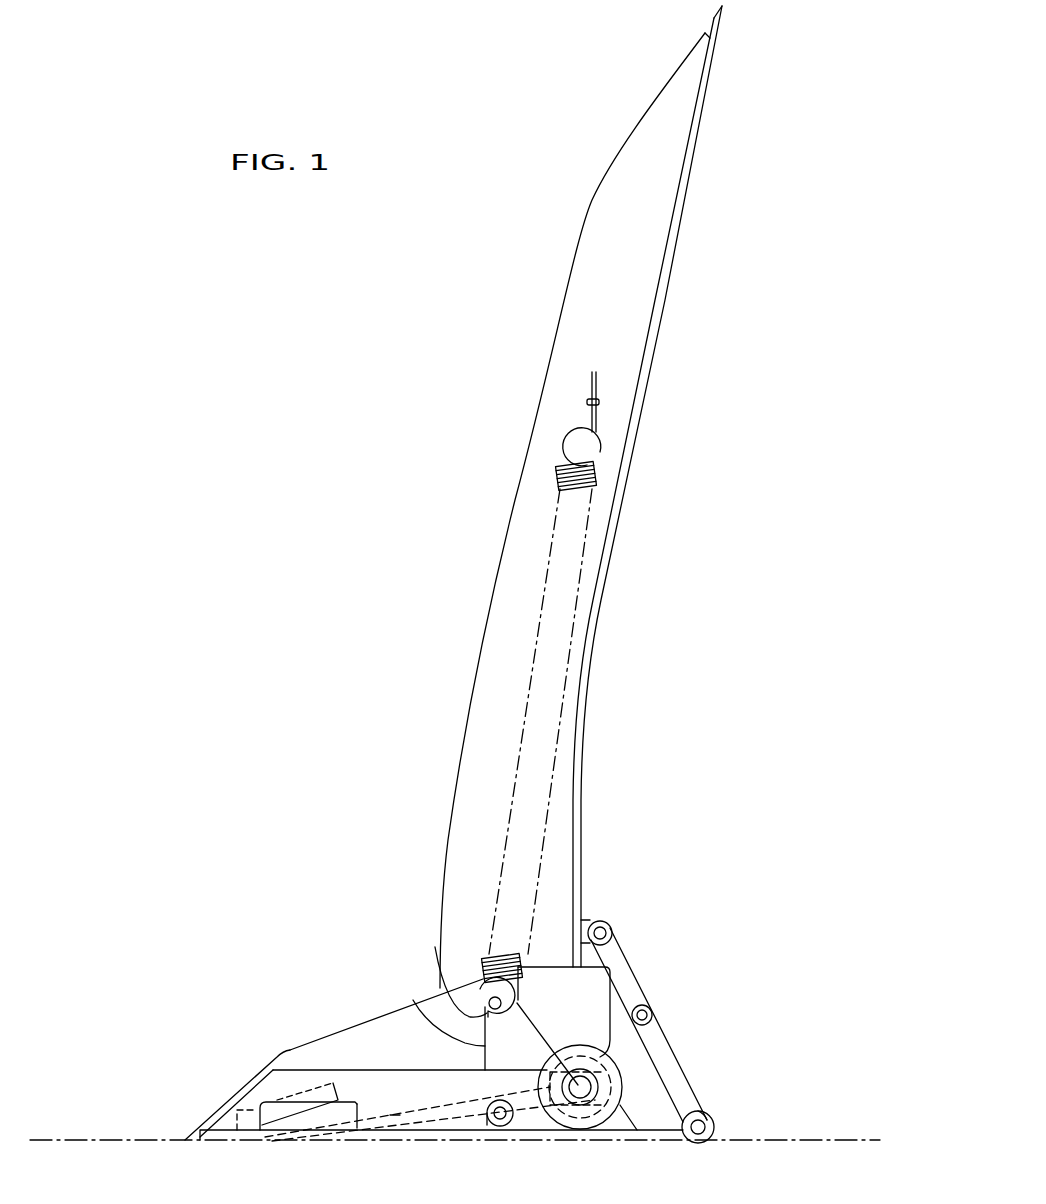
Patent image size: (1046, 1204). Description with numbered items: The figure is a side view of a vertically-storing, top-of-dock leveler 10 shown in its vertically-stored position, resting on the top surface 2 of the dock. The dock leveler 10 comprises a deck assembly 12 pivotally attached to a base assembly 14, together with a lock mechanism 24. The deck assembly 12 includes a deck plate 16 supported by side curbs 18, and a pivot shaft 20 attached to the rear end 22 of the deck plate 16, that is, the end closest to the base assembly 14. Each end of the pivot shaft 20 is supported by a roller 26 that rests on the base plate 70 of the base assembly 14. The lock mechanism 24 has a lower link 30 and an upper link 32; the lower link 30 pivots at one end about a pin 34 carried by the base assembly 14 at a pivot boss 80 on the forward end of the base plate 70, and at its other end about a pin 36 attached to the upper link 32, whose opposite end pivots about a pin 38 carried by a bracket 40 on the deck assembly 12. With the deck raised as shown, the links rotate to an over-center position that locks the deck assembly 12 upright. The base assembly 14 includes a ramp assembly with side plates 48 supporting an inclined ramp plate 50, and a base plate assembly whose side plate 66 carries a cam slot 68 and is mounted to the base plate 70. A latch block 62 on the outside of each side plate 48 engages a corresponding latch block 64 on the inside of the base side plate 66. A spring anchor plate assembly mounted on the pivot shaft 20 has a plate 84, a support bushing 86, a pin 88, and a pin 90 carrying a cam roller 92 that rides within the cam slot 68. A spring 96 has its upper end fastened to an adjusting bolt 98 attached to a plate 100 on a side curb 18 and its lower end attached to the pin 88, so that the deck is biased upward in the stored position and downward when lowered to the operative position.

The top surface of the dock 2 is at (100, 1140).
The dock leveler 10 is at (783, 177).
The deck assembly 12 is at (586, 497).
The base assembly 14 is at (388, 1078).
The deck plate 16 is at (603, 594).
The side curb 18 is at (582, 298).
The pivot shaft 20 is at (588, 1115).
The rear end of the deck plate 22 is at (452, 907).
The lock mechanism 24 is at (712, 1035).
The roller 26 is at (628, 1073).
The lower link 30 is at (658, 1032).
The upper link 32 is at (632, 975).
The pin 34 is at (714, 1125).
The pin 36 is at (650, 1010).
The pin 38 is at (612, 930).
The bracket 40 is at (593, 920).
The side plate 48 is at (290, 1050).
The ramp plate 50 is at (395, 1115).
The latch block 62 is at (260, 1127).
The latch block 64 is at (223, 1103).
The side plate 66 is at (320, 1067).
The cam slot 68 is at (357, 1128).
The base plate 70 is at (662, 1140).
The pivot boss 80 is at (700, 1108).
The plate 84 is at (413, 1000).
The support bushing 86 is at (587, 1103).
The pin 88 is at (433, 946).
The pin 90 is at (498, 1126).
The cam roller 92 is at (488, 1122).
The spring 96 is at (502, 668).
The adjusting bolt 98 is at (590, 380).
The plate 100 is at (587, 405).